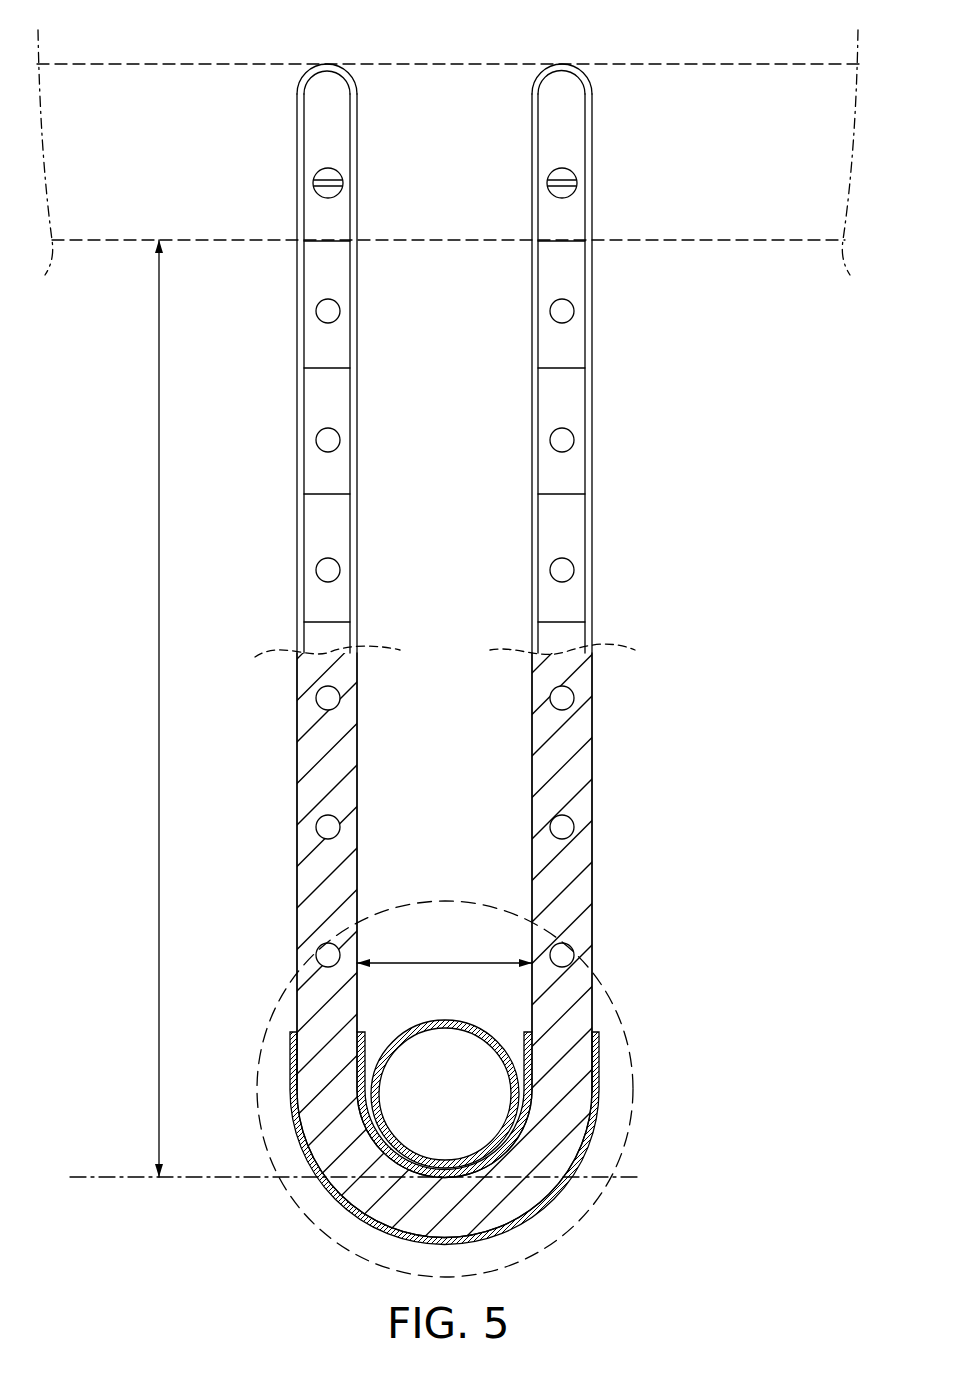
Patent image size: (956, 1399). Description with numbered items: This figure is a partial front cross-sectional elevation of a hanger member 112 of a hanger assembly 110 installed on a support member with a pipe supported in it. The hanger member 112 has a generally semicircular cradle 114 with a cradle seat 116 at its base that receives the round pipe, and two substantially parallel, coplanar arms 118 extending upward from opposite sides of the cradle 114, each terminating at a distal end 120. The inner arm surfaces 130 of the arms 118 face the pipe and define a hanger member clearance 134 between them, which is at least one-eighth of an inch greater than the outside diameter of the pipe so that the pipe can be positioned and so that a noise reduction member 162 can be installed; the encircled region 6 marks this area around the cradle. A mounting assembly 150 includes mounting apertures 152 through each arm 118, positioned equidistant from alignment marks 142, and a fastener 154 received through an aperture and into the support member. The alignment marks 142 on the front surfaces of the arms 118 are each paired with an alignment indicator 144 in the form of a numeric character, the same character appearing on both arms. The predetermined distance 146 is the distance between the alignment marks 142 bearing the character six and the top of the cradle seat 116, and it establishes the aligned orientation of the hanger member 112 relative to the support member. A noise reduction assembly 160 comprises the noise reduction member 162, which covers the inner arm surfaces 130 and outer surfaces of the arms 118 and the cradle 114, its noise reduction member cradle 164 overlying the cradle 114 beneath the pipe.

The detail view circle 6 is at (465, 1089).
The hanger assembly 110 is at (478, 654).
The hanger member 112 is at (494, 871).
The cradle 114 is at (478, 697).
The cradle seat 116 is at (400, 700).
The arm 118 is at (442, 361).
The distal end 120 is at (440, 47).
The inner arm surface 130 is at (441, 927).
The hanger member clearance 134 is at (444, 912).
The alignment mark 142 is at (400, 431).
The alignment indicator 144 is at (392, 402).
The predetermined distance 146 is at (112, 708).
The mounting assembly 150 is at (485, 381).
The mounting aperture 152 is at (489, 423).
The fastener 154 is at (487, 166).
The noise reduction assembly 160 is at (507, 1138).
The noise reduction member 162 is at (507, 1138).
The noise reduction member cradle 164 is at (514, 1133).